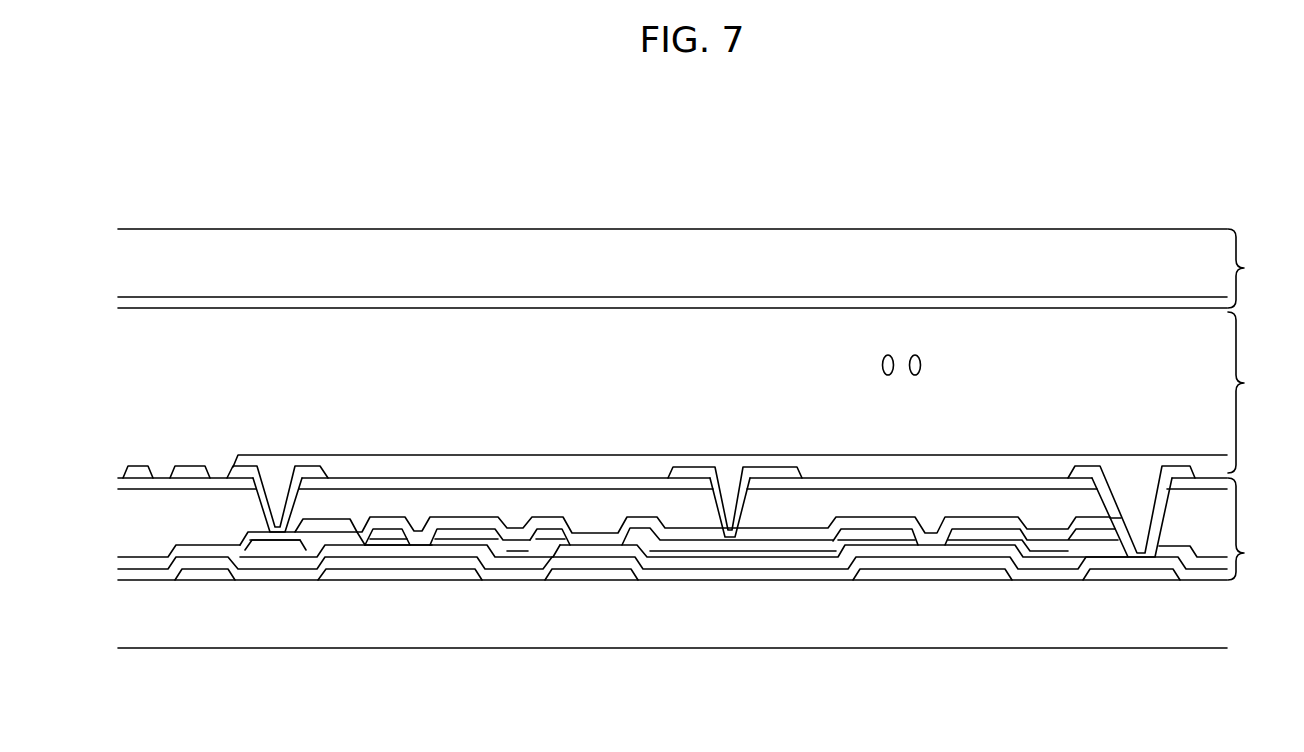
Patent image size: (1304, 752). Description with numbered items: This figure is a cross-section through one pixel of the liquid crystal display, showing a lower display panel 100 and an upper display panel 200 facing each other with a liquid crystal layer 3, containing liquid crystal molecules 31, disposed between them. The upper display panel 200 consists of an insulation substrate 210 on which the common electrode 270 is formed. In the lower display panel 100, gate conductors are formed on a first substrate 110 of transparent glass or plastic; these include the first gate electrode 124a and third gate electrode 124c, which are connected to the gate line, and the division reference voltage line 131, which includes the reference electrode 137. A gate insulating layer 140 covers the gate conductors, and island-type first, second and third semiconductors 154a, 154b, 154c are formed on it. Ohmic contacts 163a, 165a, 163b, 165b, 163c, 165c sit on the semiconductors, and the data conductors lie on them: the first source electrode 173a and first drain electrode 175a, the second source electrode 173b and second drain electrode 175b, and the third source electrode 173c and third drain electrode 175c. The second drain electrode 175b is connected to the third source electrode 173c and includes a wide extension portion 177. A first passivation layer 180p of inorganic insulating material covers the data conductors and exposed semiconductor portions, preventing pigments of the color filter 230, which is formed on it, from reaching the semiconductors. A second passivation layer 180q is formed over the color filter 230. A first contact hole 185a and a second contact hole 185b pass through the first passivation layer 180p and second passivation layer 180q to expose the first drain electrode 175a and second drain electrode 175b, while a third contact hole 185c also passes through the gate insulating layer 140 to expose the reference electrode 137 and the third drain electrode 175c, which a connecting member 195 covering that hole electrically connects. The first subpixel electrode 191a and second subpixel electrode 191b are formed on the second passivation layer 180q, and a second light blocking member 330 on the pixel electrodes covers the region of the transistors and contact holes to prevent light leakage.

The insulation substrate 210 is at (765, 245).
The common electrode 270 is at (877, 303).
The upper display panel 200 is at (1252, 268).
The liquid crystal layer 3 is at (1245, 392).
The liquid crystal molecules 31 is at (921, 364).
The lower display panel 100 is at (1253, 529).
The first substrate 110 is at (836, 624).
The division reference voltage line 131 is at (200, 573).
The first gate electrode 124a is at (334, 571).
The third gate electrode 124c is at (915, 575).
The reference electrode 137 is at (1133, 574).
The gate insulating layer 140 is at (750, 567).
The first semiconductor 154a is at (345, 553).
The second semiconductor 154b is at (464, 548).
The third semiconductor 154c is at (612, 549).
The ohmic contact 163a is at (378, 546).
The ohmic contact 165a is at (263, 554).
The ohmic contact 163b is at (401, 539).
The ohmic contact 165b is at (482, 556).
The ohmic contact 163c is at (893, 540).
The ohmic contact 165c is at (995, 540).
The first source electrode 173a is at (368, 520).
The first drain electrode 175a is at (283, 539).
The second source electrode 173b is at (401, 524).
The second drain electrode 175b is at (459, 537).
The third source electrode 173c is at (640, 537).
The third drain electrode 175c is at (960, 530).
The wide extension portion 177 is at (780, 540).
The first passivation layer 180p is at (141, 563).
The second passivation layer 180q is at (563, 483).
The color filter 230 is at (517, 500).
The first contact hole 185a is at (258, 503).
The second contact hole 185b is at (715, 505).
The third contact hole 185c is at (1105, 502).
The first subpixel electrode 191a is at (136, 466).
The second subpixel electrode 191b is at (688, 466).
The connecting member 195 is at (1170, 466).
The second light blocking member 330 is at (812, 462).